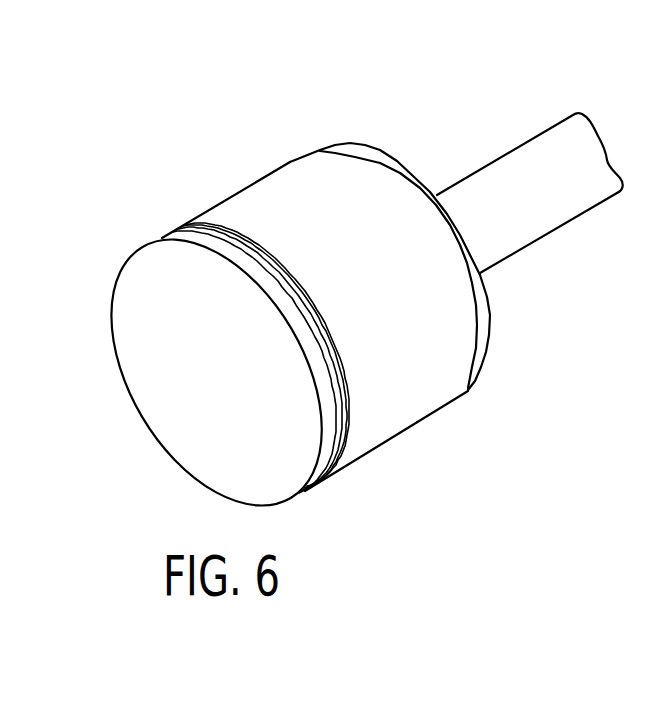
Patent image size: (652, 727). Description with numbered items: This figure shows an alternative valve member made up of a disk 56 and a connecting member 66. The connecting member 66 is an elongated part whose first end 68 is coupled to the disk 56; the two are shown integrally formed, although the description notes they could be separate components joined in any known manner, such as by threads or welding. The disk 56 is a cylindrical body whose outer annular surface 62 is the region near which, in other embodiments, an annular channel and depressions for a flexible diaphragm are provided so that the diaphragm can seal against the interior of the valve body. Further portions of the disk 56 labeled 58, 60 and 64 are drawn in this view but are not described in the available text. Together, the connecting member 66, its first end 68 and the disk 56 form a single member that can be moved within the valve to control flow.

The disk 56 is at (187, 166).
The front face 58 is at (231, 389).
The cylindrical body 60 is at (394, 165).
The annular surface 62 is at (476, 396).
The groove 64 is at (305, 491).
The connecting member 66 is at (498, 151).
The first end 68 is at (550, 235).